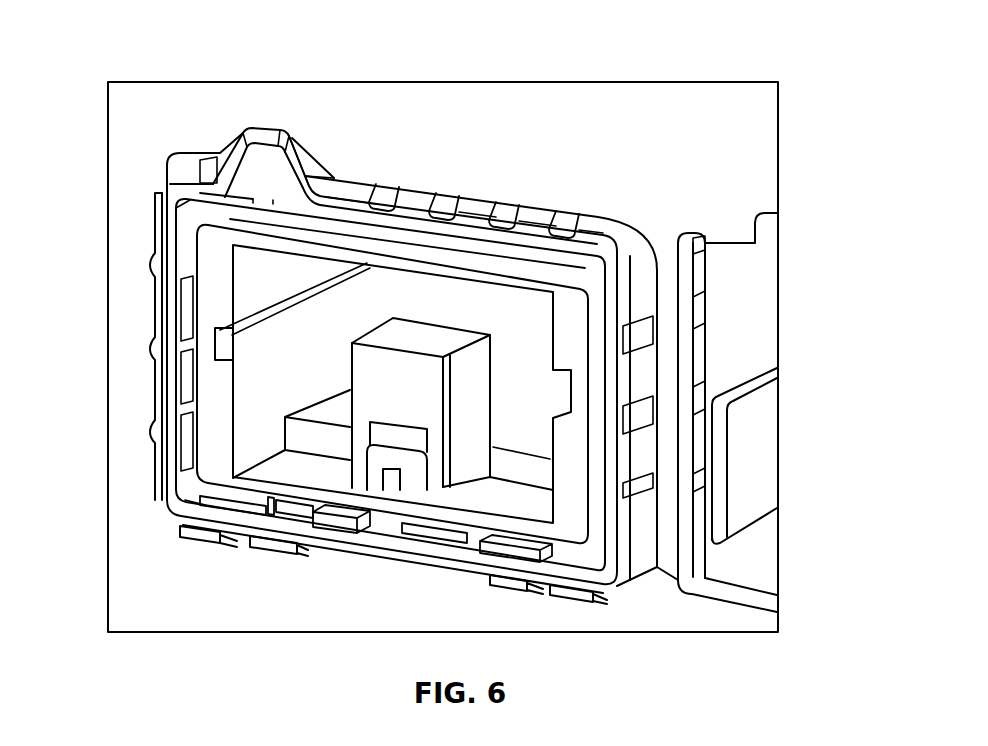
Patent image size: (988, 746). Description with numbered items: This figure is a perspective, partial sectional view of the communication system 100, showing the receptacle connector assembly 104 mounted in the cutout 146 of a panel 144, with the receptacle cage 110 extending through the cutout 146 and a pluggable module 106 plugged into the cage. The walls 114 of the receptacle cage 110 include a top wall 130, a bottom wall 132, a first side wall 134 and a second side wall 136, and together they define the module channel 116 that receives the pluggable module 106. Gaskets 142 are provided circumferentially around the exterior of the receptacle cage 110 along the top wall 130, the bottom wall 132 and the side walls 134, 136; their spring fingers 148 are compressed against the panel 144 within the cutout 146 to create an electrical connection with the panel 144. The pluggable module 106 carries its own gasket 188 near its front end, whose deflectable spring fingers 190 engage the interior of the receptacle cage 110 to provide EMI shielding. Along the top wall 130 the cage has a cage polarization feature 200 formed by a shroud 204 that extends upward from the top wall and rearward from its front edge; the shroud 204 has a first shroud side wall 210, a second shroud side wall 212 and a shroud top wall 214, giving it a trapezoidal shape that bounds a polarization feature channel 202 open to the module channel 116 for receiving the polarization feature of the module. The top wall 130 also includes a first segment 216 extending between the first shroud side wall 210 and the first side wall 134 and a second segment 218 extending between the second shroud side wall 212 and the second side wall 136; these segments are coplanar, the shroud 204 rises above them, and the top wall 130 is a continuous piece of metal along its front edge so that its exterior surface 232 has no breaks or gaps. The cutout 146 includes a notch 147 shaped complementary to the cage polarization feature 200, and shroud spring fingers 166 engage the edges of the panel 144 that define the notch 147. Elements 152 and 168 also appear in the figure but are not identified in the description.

The communication system 100 is at (717, 40).
The receptacle connector assembly 104 is at (750, 310).
The pluggable module 106 is at (220, 385).
The receptacle cage 110 is at (153, 347).
The walls 114 is at (167, 437).
The module channel 116 is at (170, 522).
The top wall 130 is at (523, 243).
The bottom wall 132 is at (527, 581).
The first side wall 134 is at (610, 533).
The second side wall 136 is at (193, 497).
The gaskets 142 is at (812, 407).
The panel 144 is at (663, 567).
The cutout 146 is at (630, 587).
The notch 147 is at (327, 147).
The spring fingers 148 is at (477, 203).
The contact block 152 is at (419, 404).
The shroud spring fingers 166 is at (272, 145).
The latch block 168 is at (192, 158).
The gasket 188 is at (293, 503).
The spring fingers 190 is at (512, 548).
The cage polarization feature 200 is at (313, 137).
The polarization feature channel 202 is at (252, 185).
The shroud 204 is at (258, 145).
The first shroud side wall 210 is at (218, 172).
The second shroud side wall 212 is at (337, 177).
The shroud top wall 214 is at (292, 153).
The first segment 216 is at (200, 183).
The second segment 218 is at (567, 222).
The exterior surface 232 is at (503, 217).